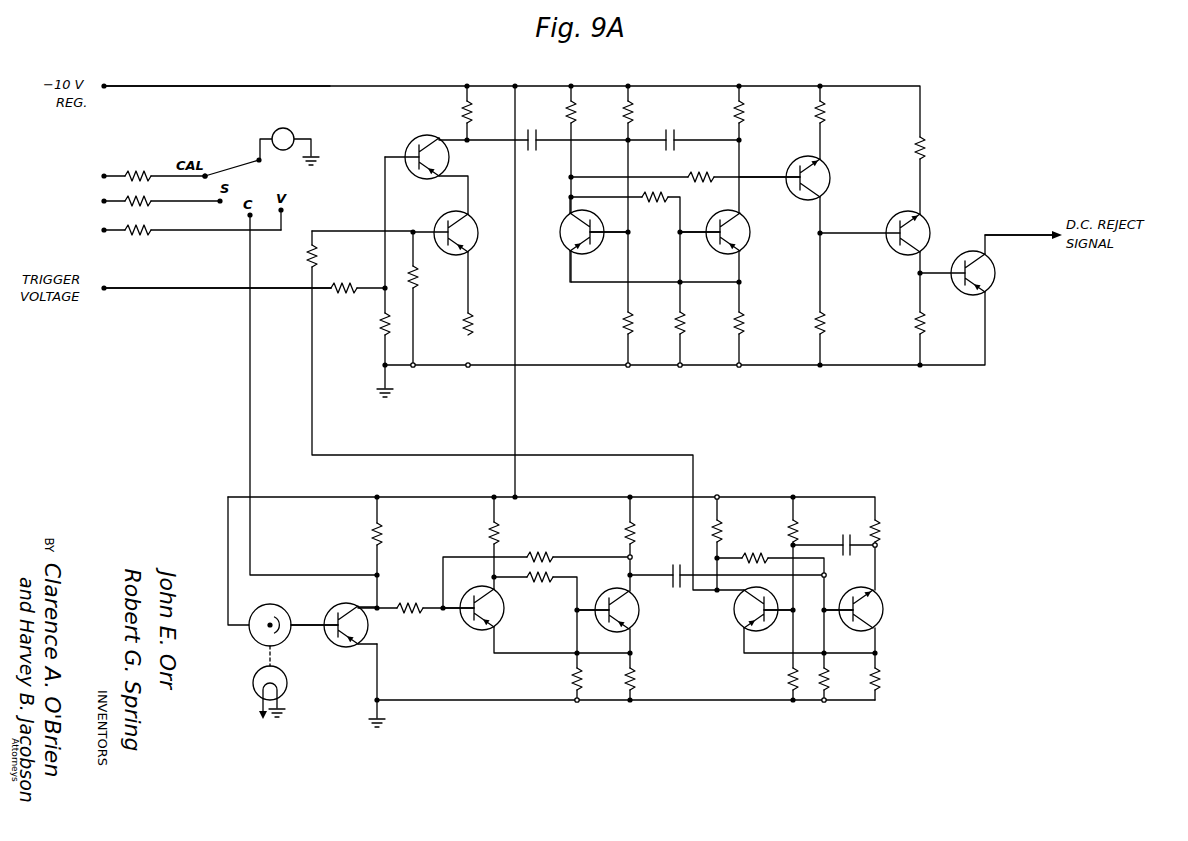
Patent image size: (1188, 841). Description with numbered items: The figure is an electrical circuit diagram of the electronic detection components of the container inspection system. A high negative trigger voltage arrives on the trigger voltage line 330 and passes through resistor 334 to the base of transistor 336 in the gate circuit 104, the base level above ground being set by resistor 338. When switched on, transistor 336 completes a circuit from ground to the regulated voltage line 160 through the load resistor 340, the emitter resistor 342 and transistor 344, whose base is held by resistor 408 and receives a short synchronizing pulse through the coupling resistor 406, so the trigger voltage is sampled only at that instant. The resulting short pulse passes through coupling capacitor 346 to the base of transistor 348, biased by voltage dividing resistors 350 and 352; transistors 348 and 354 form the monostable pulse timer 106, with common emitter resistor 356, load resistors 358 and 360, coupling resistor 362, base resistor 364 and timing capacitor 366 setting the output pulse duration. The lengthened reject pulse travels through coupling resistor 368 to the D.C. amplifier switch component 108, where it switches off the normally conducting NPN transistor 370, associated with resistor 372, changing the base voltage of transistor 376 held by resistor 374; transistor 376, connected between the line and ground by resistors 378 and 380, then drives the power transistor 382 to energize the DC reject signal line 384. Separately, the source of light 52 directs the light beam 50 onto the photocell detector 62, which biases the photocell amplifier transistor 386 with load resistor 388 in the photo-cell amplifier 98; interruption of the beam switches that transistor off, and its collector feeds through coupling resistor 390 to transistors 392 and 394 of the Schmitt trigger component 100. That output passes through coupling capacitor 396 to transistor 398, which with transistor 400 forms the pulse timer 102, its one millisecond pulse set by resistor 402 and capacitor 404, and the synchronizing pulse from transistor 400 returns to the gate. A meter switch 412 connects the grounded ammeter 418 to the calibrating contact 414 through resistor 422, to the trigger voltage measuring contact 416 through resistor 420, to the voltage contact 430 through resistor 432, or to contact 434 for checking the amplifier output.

The regulated voltage line 160 is at (336, 86).
The ammeter 418 is at (294, 131).
The meter switch 412 is at (236, 164).
The calibrating contact 414 is at (205, 172).
The resistor 422 is at (138, 168).
The resistor 420 is at (152, 198).
The trigger voltage measuring contact 416 is at (216, 205).
The contact 434 is at (252, 212).
The voltage contact 430 is at (290, 209).
The resistor 432 is at (146, 236).
The trigger voltage line 330 is at (162, 292).
The coupling resistor 406 is at (320, 255).
The resistor 334 is at (343, 298).
The resistor 338 is at (378, 334).
The resistor 408 is at (418, 286).
The transistor 336 is at (425, 136).
The load resistor 340 is at (476, 111).
The transistor 344 is at (477, 228).
The emitter resistor 342 is at (477, 330).
The coupling capacitor 346 is at (537, 131).
The gate circuit 104 is at (410, 255).
The load resistor 358 is at (581, 112).
The voltage dividing resistor 350 is at (640, 118).
The load resistor 360 is at (749, 115).
The timing capacitor 366 is at (677, 147).
The coupling resistor 368 is at (705, 181).
The coupling resistor 362 is at (654, 205).
The transistor 348 is at (565, 242).
The transistor 354 is at (748, 246).
The voltage dividing resistor 352 is at (620, 320).
The resistor 364 is at (690, 318).
The resistor 356 is at (745, 321).
The pulse timer 106 is at (655, 265).
The resistor 372 is at (832, 115).
The transistor 370 is at (828, 166).
The resistor 378 is at (932, 146).
The transistor 376 is at (888, 221).
The resistor 374 is at (830, 318).
The resistor 380 is at (910, 326).
The power transistor 382 is at (963, 246).
The DC reject signal line 384 is at (1039, 238).
The D.C. amplifier switch component 108 is at (895, 267).
The photocell detector 62 is at (276, 608).
The light beam 50 is at (276, 658).
The source of light 52 is at (288, 683).
The photocell amplifier transistor 386 is at (368, 623).
The load resistor 388 is at (390, 536).
The coupling resistor 390 is at (403, 600).
The photo-cell amplifier 98 is at (332, 642).
The transistor 392 is at (475, 633).
The transistor 394 is at (640, 623).
The coupling capacitor 396 is at (674, 591).
The trigger component 100 is at (587, 618).
The resistor 402 is at (748, 549).
The capacitor 404 is at (839, 541).
The transistor 400 is at (742, 622).
The transistor 398 is at (881, 605).
The pulse timer 102 is at (800, 630).